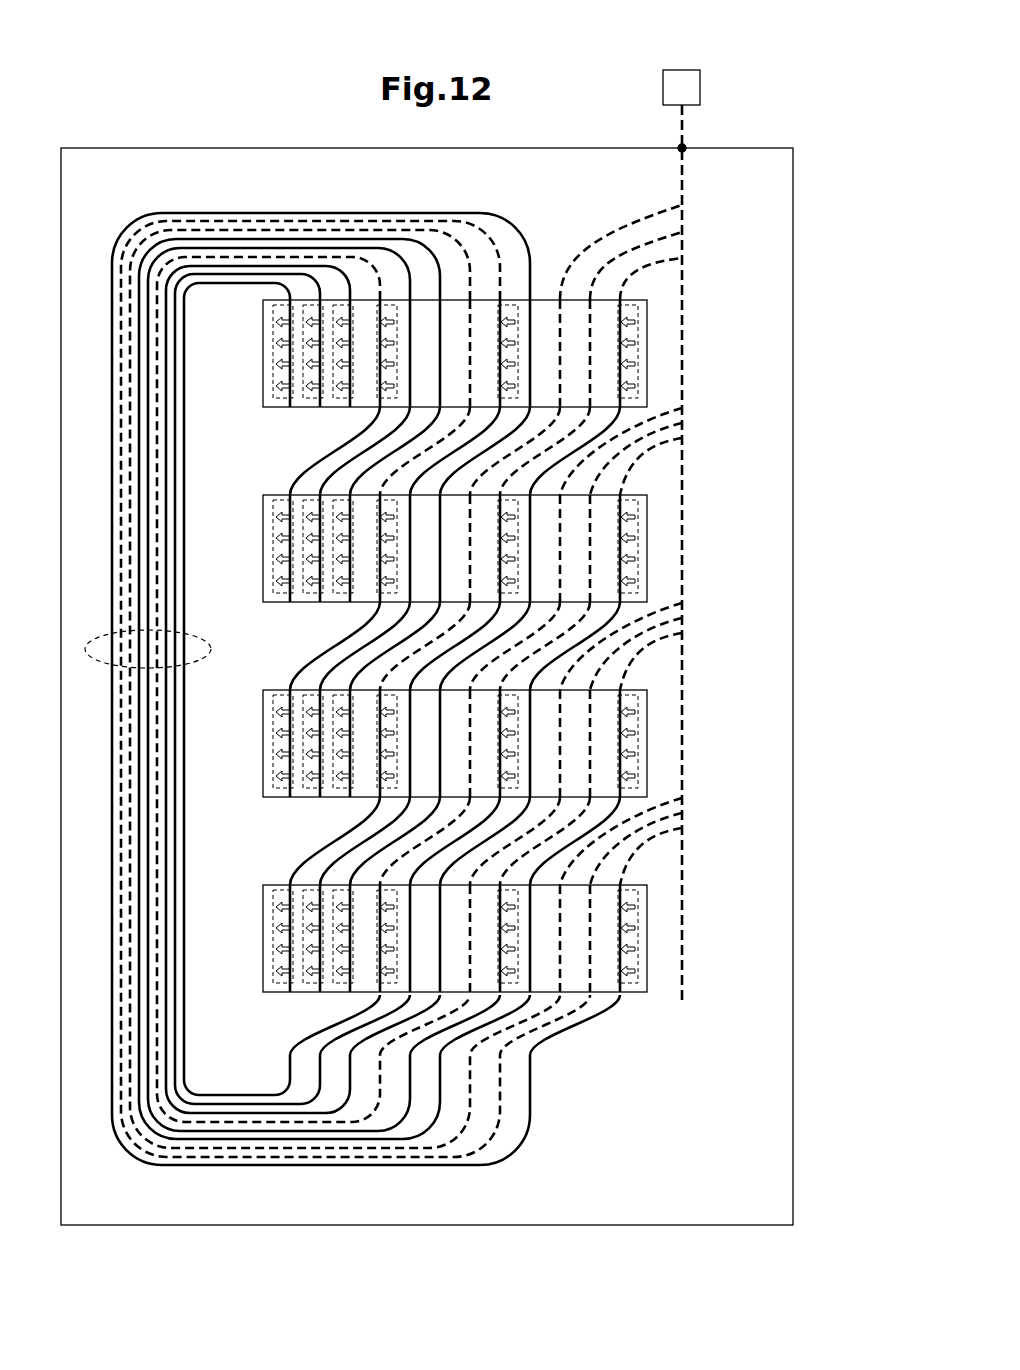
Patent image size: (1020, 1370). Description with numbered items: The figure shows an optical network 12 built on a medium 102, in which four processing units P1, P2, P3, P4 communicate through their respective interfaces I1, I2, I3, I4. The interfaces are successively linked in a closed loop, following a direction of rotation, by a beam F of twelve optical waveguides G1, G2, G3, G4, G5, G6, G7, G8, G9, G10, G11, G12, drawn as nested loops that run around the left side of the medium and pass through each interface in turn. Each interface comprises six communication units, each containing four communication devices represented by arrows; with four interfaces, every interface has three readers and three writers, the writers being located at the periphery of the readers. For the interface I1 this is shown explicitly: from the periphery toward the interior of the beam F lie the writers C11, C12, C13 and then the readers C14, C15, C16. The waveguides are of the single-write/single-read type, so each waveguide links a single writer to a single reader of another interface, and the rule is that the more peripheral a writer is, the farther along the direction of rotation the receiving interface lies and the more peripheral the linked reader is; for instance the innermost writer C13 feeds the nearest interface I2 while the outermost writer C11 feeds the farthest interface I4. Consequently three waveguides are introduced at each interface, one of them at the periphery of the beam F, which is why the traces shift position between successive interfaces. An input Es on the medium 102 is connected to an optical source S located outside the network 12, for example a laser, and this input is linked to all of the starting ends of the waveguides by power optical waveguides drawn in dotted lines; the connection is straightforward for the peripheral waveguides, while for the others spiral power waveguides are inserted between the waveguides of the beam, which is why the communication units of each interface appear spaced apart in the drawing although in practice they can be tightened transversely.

The optical network 12 is at (205, 149).
The medium 102 is at (753, 1194).
The optical source S is at (694, 101).
The input Es is at (685, 146).
The beam F is at (206, 641).
The processing unit P1 is at (650, 322).
The processing unit P2 is at (650, 518).
The processing unit P3 is at (650, 713).
The processing unit P4 is at (650, 908).
The interface I1 is at (646, 348).
The interface I2 is at (646, 548).
The interface I3 is at (646, 743).
The interface I4 is at (646, 938).
The writer C11 is at (650, 310).
The writer C12 is at (515, 325).
The writer C13 is at (382, 305).
The reader C14 is at (330, 410).
The reader C15 is at (300, 412).
The reader C16 is at (273, 366).
The optical waveguide G1 is at (620, 298).
The optical waveguide G2 is at (500, 300).
The optical waveguide G3 is at (381, 300).
The optical waveguide G4 is at (622, 493).
The optical waveguide G5 is at (640, 470).
The optical waveguide G6 is at (380, 495).
The optical waveguide G7 is at (622, 688).
The optical waveguide G8 is at (640, 665).
The optical waveguide G9 is at (380, 690).
The optical waveguide G10 is at (622, 883).
The optical waveguide G11 is at (640, 860).
The optical waveguide G12 is at (380, 885).